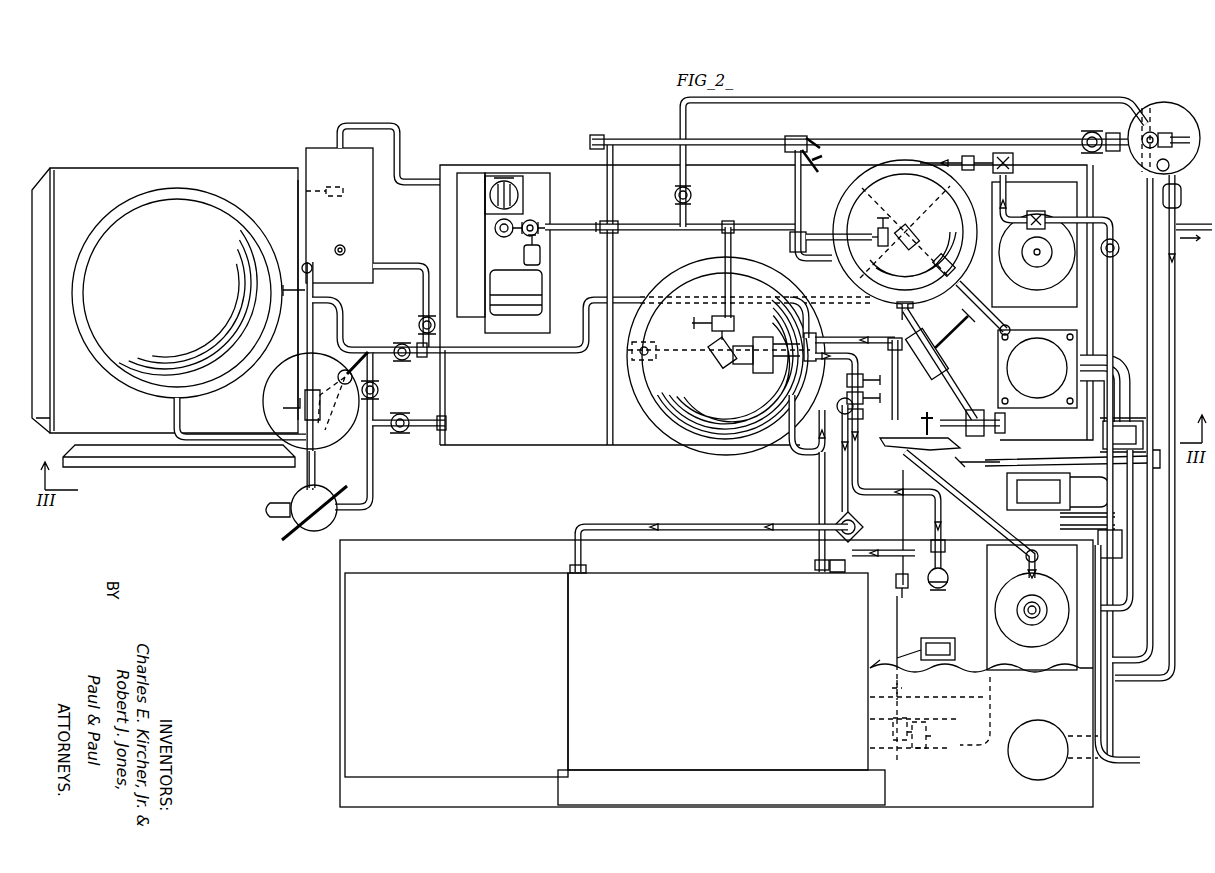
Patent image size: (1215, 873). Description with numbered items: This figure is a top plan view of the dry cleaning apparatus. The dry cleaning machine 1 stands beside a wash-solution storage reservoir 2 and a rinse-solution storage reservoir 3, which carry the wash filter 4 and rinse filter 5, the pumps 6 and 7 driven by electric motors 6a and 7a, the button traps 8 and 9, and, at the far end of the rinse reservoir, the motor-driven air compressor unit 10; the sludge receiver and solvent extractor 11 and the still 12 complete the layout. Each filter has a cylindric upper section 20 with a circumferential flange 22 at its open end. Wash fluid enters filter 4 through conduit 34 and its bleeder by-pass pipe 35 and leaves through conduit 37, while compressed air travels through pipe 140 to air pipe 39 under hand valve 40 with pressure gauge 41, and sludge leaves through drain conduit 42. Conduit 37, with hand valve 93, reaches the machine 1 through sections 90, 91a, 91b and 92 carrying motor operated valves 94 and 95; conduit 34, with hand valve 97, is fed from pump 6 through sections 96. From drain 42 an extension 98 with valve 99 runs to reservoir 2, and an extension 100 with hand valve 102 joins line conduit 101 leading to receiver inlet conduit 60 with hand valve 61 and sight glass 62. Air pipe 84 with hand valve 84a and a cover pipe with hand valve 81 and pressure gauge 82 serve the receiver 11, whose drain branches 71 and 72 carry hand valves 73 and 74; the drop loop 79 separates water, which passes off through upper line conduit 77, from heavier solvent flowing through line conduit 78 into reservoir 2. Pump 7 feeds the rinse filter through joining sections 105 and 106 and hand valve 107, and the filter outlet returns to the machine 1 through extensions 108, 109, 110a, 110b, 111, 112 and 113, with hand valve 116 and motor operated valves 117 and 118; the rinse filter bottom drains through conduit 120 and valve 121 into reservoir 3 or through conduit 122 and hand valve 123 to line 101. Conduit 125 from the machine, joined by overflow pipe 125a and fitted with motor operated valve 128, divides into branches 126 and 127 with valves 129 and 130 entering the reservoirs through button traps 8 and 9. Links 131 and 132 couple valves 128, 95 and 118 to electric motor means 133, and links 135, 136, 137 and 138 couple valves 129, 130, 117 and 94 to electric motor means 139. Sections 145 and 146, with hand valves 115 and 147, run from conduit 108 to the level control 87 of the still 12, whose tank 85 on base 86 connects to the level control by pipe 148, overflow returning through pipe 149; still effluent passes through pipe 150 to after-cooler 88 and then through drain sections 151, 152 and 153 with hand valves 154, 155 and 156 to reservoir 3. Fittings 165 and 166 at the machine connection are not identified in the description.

The dry cleaning machine 1 is at (615, 689).
The storage reservoir for the wash solution 2 is at (972, 805).
The storage reservoir for the rinse solution 3 is at (515, 447).
The wash fluid filter 4 is at (700, 445).
The rinse fluid filter 5 is at (927, 164).
The pump 6 is at (1030, 660).
The electric motor 6a is at (1020, 620).
The pump 7 is at (1076, 270).
The electric motor 7a is at (1028, 242).
The button trap 8 is at (1052, 750).
The button trap 9 is at (1037, 369).
The motor-driven air compressor unit 10 is at (560, 245).
The sludge receiver and solvent extractor 11 is at (1180, 105).
The still 12 is at (130, 160).
The upper section 20 is at (650, 395).
The filter cover 22 is at (648, 415).
The conduit 34 is at (800, 326).
The bleeder by-pass pipe 35 is at (840, 340).
The conduit 37 is at (853, 379).
The pipe 39 is at (727, 242).
The hand valve 40 is at (690, 323).
The pressure gauge 41 is at (712, 360).
The sludge drain conduit 42 is at (742, 364).
The conduit 60 is at (1140, 150).
The hand valve 61 is at (1090, 131).
The sight glass 62 is at (1113, 132).
The branch 71 is at (1178, 180).
The branch 72 is at (1140, 620).
The hand valve 73 is at (1142, 186).
The hand valve 74 is at (1162, 108).
The line conduit 77 is at (1192, 225).
The line conduit 78 is at (1176, 296).
The drop loop 79 is at (1162, 200).
The hand valve 81 is at (1148, 128).
The pressure gauge 82 is at (1178, 144).
The pipe 84 is at (836, 98).
The hand valve 84a is at (692, 192).
The tank 85 is at (177, 293).
The base 86 is at (273, 170).
The level control 87 is at (362, 222).
The after-cooler 88 is at (345, 440).
The connecting section 90 is at (944, 547).
The connecting section 91a is at (955, 500).
The connecting section 91b is at (948, 587).
The connecting section 92 is at (882, 556).
The hand valve 93 is at (853, 393).
The motor operated valve 94 is at (906, 518).
The motor operated valve 95 is at (911, 590).
The continuing sections 96 is at (1003, 576).
The hand valve 97 is at (855, 410).
The extension 98 is at (790, 452).
The manually-operable valve 99 is at (767, 373).
The extension 100 is at (616, 258).
The line conduit 101 is at (653, 141).
The hand valve 102 is at (638, 362).
The joining section 105 is at (994, 152).
The joining section 106 is at (1008, 194).
The hand valve 107 is at (790, 160).
The extension 108 is at (896, 379).
The extension 109 is at (950, 380).
The section 110a is at (984, 413).
The section 110b is at (925, 440).
The extension 111 is at (955, 420).
The extension 112 is at (818, 480).
The extension 113 is at (740, 524).
The hand valve 115 is at (945, 338).
The hand valve 116 is at (942, 354).
The motor operated valve 117 is at (1005, 422).
The motor operated valve 118 is at (928, 411).
The conduit 120 is at (1012, 318).
The manually operable valve 121 is at (895, 286).
The conduit 122 is at (868, 190).
The hand valve 123 is at (828, 165).
The conduit 125 is at (992, 700).
The overflow pipe 125a is at (922, 687).
The branch 126 is at (1122, 682).
The branch 127 is at (1131, 370).
The motor operated valve 128 is at (917, 752).
The motor operated valve 129 is at (1131, 529).
The motor operated valve 130 is at (1138, 424).
The link 131 is at (898, 618).
The link 132 is at (862, 518).
The electric motor means 133 is at (926, 649).
The link 135 is at (1118, 526).
The link 136 is at (1118, 512).
The link 137 is at (1060, 458).
The link 138 is at (981, 463).
The electric motor means 139 is at (1058, 491).
The pipe 140 is at (650, 225).
The section 145 is at (514, 355).
The section 146 is at (423, 292).
The hand valve 147 is at (418, 324).
The pipe 148 is at (332, 186).
The pipe 149 is at (402, 136).
The pipe 150 is at (216, 440).
The drain pipe section 151 is at (305, 350).
The drain pipe section 152 is at (376, 372).
The drain pipe section 153 is at (431, 430).
The hand valve 154 is at (350, 345).
The hand valve 155 is at (380, 392).
The hand valve 156 is at (400, 433).
The fitting 165 is at (833, 577).
The pipe 166 is at (832, 510).